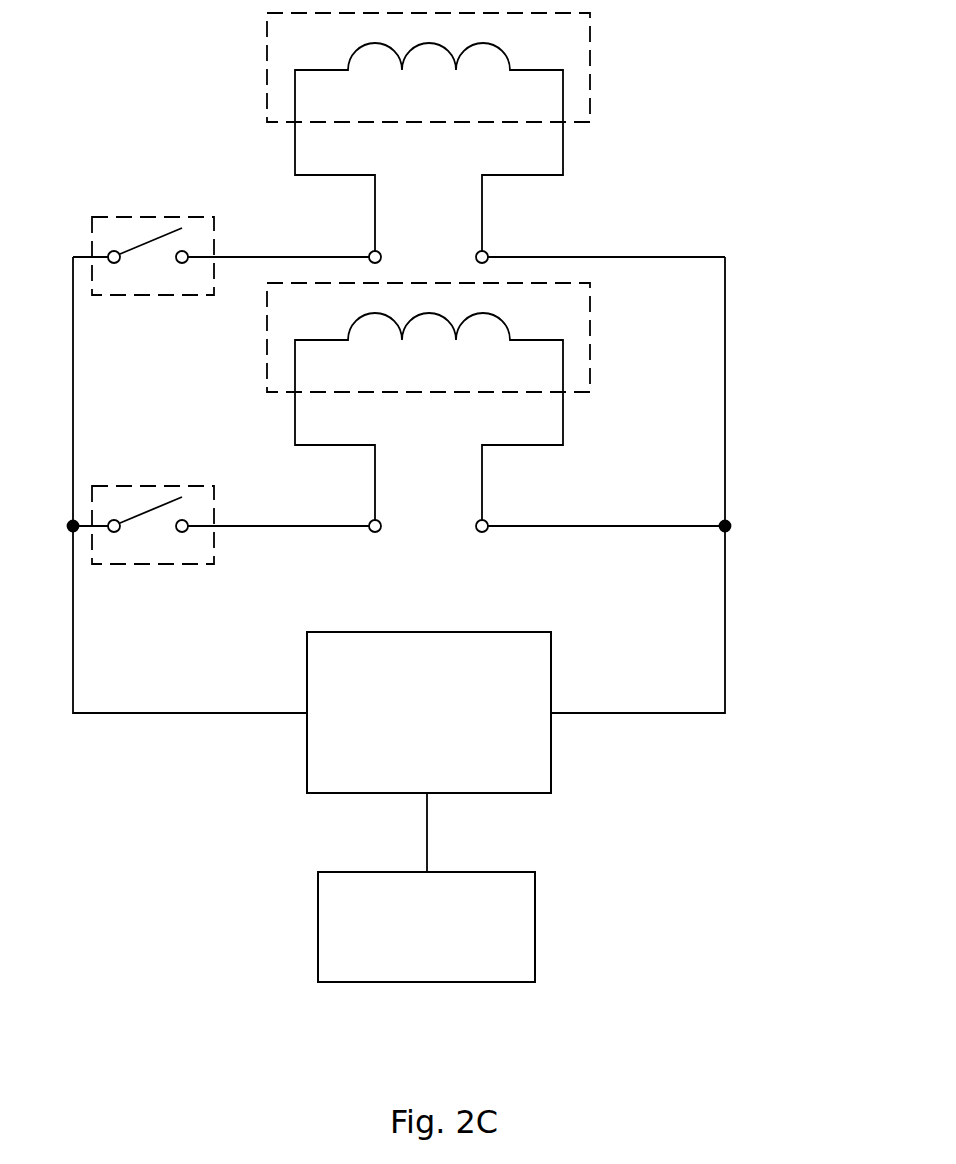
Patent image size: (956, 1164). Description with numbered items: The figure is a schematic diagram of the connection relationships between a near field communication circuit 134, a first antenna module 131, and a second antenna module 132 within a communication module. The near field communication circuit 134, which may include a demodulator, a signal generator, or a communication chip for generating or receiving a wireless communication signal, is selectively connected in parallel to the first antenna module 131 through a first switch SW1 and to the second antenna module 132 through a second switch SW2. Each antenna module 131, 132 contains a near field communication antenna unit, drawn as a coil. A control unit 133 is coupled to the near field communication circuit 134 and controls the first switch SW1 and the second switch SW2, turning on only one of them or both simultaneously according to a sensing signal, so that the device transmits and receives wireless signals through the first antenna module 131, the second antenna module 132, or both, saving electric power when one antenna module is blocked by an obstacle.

The first antenna module 131 is at (596, 75).
The second antenna module 132 is at (596, 345).
The control unit 133 is at (447, 954).
The near field communication circuit 134 is at (410, 771).
The first switch SW1 is at (156, 215).
The second switch SW2 is at (156, 483).